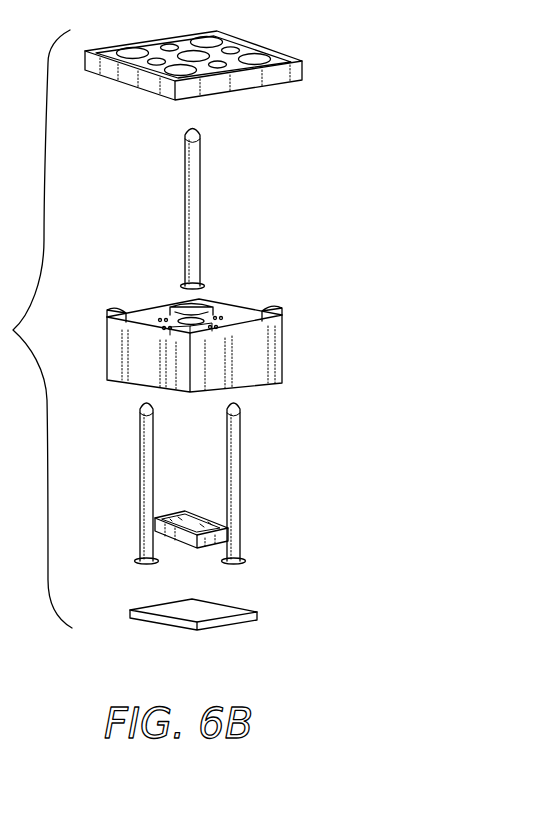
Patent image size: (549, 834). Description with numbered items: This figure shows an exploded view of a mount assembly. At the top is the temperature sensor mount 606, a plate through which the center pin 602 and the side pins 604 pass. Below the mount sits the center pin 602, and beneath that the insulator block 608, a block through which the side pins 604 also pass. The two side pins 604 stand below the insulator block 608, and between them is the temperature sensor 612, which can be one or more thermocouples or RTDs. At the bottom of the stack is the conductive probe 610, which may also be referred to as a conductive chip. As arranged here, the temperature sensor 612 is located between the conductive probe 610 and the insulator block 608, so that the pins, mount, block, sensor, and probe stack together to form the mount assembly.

The center pin 602 is at (202, 200).
The side pins 604 is at (140, 465).
The temperature sensor mount 606 is at (303, 70).
The insulator block 608 is at (283, 342).
The conductive probe 610 is at (258, 613).
The temperature sensor 612 is at (183, 545).